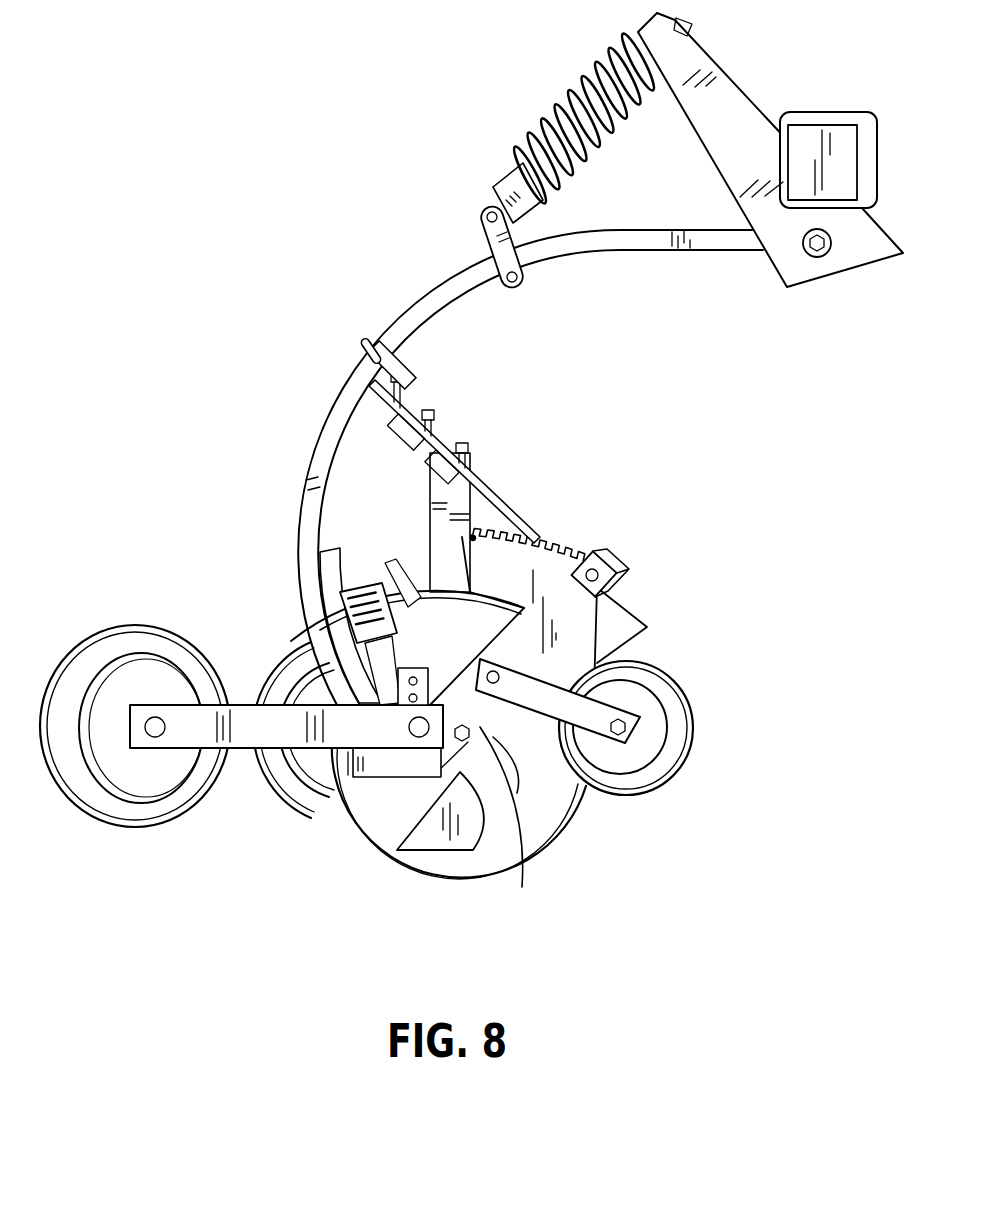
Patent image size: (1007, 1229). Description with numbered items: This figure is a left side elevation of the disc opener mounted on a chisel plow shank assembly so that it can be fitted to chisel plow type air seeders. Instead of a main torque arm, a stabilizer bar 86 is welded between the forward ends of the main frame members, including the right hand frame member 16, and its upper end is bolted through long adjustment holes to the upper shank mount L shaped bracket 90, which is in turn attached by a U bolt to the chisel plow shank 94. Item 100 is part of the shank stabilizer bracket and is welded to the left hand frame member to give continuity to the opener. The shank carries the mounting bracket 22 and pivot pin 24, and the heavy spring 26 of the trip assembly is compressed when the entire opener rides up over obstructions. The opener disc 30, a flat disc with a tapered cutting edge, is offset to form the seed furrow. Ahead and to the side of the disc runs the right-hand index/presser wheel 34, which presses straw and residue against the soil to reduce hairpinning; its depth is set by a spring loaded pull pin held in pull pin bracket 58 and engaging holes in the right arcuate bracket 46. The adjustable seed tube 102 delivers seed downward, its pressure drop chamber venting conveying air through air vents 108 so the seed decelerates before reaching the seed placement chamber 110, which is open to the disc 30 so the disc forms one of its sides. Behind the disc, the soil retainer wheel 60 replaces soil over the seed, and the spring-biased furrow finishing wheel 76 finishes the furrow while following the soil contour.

The right hand frame member 16 is at (522, 884).
The mounting bracket 22 is at (727, 90).
The pivot pin 24 is at (817, 257).
The heavy spring 26 is at (593, 77).
The opener disc 30 is at (535, 812).
The right-hand index/presser wheel 34 is at (678, 730).
The right arcuate bracket 46 is at (580, 623).
The pull pin bracket 58 is at (617, 557).
The soil retainer wheel 60 is at (300, 793).
The furrow finishing wheel 76 is at (140, 817).
The stabilizer bar 86 is at (483, 497).
The upper shank mount L shaped bracket 90 is at (410, 360).
The chisel plow shank 94 is at (620, 247).
The shank stabilizer bracket part 100 is at (437, 527).
The adjustable seed tube 102 is at (333, 570).
The air vents 108 is at (342, 610).
The seed placement chamber 110 is at (433, 837).